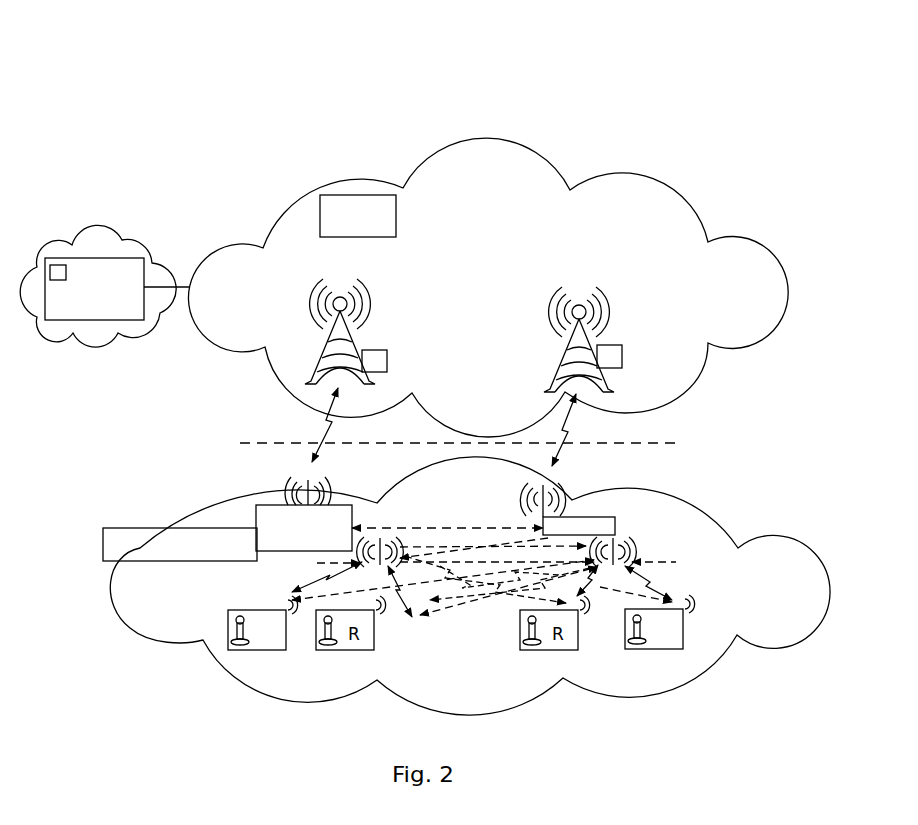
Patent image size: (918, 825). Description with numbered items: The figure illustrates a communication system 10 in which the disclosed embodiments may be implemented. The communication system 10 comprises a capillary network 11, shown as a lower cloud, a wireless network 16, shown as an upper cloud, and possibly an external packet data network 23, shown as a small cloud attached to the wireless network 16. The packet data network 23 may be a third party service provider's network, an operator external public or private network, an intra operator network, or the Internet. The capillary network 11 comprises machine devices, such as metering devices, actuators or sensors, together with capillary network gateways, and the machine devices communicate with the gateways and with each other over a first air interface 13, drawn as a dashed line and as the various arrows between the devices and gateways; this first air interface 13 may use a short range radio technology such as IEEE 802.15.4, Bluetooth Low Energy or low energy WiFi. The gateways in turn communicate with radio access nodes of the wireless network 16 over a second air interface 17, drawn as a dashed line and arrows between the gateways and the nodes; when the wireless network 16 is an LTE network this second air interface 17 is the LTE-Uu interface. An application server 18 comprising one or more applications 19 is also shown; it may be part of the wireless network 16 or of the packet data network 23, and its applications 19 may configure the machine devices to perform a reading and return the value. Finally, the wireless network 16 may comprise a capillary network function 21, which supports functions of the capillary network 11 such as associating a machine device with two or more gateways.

The communication system 10 is at (612, 118).
The capillary network 11 is at (780, 578).
The first air interface 13 is at (502, 577).
The wireless network 16 is at (752, 268).
The second air interface 17 is at (477, 443).
The application server 18 is at (132, 268).
The application 19 is at (62, 264).
The capillary network function 21 is at (396, 213).
The external packet data network 23 is at (150, 262).